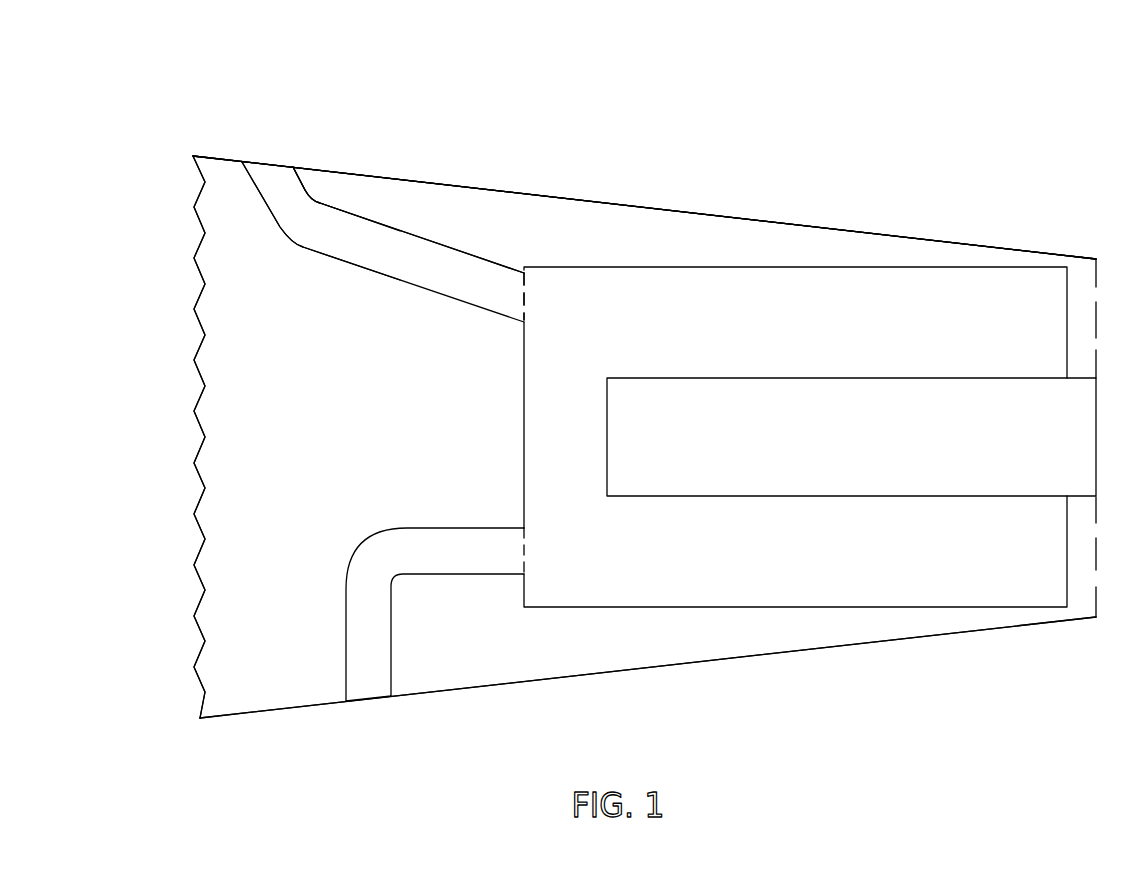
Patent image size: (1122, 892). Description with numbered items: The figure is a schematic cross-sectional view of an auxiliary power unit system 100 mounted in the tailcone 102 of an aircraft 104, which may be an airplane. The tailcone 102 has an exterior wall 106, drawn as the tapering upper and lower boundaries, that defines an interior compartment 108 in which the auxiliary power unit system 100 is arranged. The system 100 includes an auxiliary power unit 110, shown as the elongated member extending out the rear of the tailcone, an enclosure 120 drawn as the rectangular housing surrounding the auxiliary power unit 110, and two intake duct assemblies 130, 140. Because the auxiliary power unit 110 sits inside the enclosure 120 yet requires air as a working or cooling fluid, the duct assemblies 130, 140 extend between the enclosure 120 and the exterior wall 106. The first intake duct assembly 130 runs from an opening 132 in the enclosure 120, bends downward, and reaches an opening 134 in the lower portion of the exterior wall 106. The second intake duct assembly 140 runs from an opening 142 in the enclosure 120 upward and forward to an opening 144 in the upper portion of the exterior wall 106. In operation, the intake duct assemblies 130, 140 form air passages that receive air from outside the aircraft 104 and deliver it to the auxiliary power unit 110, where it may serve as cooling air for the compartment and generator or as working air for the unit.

The auxiliary power unit system 100 is at (508, 240).
The tailcone 102 is at (573, 194).
The aircraft 104 is at (184, 134).
The exterior wall 106 is at (625, 205).
The interior compartment 108 is at (371, 405).
The auxiliary power unit 110 is at (722, 378).
The enclosure 120 is at (524, 420).
The first intake duct assembly 130 is at (348, 535).
The opening 132 is at (523, 548).
The opening 134 is at (371, 695).
The second intake duct assembly 140 is at (302, 260).
The opening 142 is at (527, 292).
The opening 144 is at (270, 177).